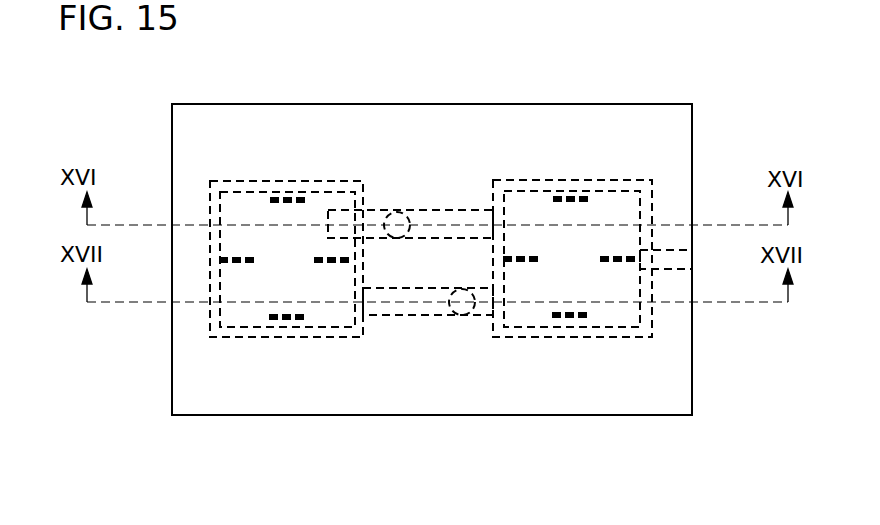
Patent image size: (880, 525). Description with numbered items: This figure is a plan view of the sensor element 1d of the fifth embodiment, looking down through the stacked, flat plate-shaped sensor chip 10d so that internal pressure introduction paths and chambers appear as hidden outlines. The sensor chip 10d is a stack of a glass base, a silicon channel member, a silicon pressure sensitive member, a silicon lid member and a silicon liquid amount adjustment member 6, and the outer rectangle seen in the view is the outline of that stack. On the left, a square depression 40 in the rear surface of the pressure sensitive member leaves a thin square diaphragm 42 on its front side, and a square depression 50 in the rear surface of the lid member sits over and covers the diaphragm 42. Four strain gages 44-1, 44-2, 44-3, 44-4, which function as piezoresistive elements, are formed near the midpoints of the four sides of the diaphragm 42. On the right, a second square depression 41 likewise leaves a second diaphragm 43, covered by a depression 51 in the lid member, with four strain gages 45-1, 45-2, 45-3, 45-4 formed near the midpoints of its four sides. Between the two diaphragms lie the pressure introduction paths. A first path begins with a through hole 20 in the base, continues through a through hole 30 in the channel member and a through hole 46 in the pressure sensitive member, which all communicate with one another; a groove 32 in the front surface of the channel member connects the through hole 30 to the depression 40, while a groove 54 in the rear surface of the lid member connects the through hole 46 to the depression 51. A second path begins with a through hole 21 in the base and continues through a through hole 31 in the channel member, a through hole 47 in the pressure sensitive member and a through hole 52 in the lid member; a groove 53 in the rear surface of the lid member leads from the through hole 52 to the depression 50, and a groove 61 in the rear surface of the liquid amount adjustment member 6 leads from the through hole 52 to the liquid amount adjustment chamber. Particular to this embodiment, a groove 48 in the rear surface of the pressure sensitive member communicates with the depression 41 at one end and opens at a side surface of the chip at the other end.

The sensor element 1d is at (334, 33).
The sensor chip 10d is at (173, 105).
The liquid amount adjustment member 6 is at (692, 195).
The depression 40 is at (233, 190).
The depression 50 is at (325, 181).
The diaphragm 42 is at (280, 248).
The strain gage 44-1 is at (272, 197).
The strain gage 44-2 is at (337, 263).
The strain gage 44-3 is at (277, 319).
The strain gage 44-4 is at (222, 263).
The groove 54 is at (457, 210).
The groove 32 is at (382, 210).
The through hole 20 is at (438, 138).
The through hole 30 is at (438, 138).
The through hole 46 is at (397, 212).
The groove 53 is at (397, 317).
The through hole 21 is at (400, 396).
The through hole 31 is at (400, 396).
The through hole 47 is at (400, 396).
The through hole 52 is at (458, 317).
The groove 61 is at (482, 315).
The depression 51 is at (623, 178).
The diaphragm 43 is at (613, 243).
The strain gage 45-1 is at (570, 198).
The strain gage 45-2 is at (600, 262).
The strain gage 45-3 is at (567, 317).
The strain gage 45-4 is at (520, 262).
The depression 41 is at (640, 312).
The groove 48 is at (680, 258).